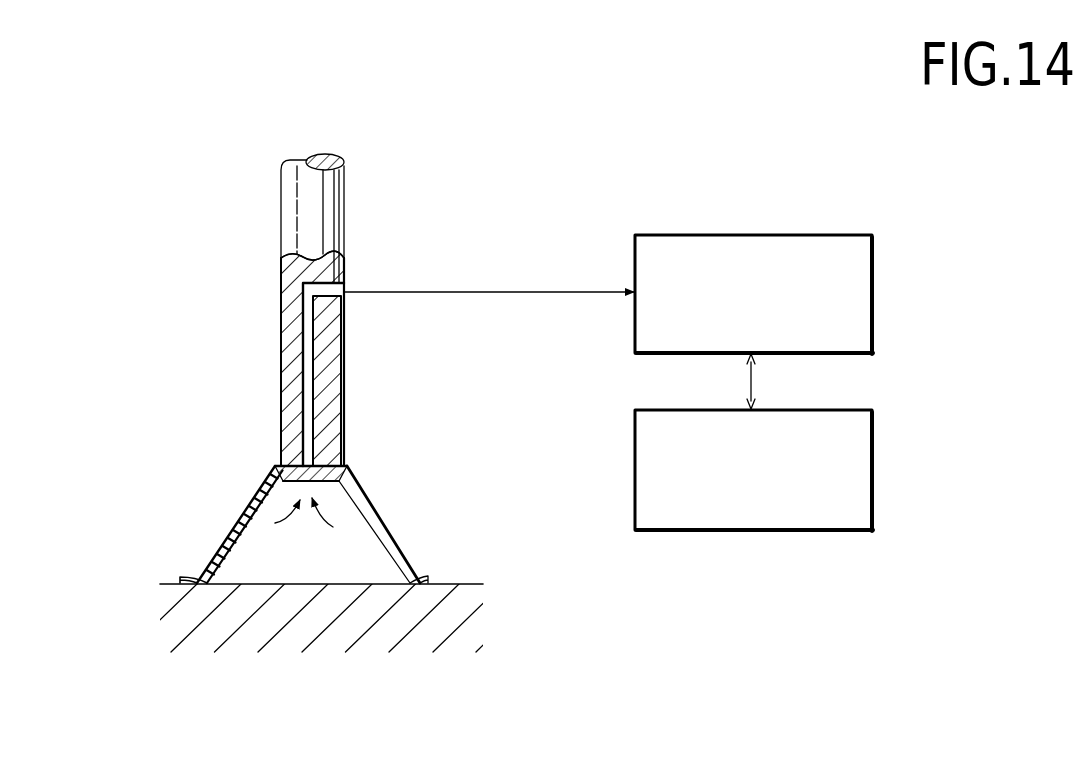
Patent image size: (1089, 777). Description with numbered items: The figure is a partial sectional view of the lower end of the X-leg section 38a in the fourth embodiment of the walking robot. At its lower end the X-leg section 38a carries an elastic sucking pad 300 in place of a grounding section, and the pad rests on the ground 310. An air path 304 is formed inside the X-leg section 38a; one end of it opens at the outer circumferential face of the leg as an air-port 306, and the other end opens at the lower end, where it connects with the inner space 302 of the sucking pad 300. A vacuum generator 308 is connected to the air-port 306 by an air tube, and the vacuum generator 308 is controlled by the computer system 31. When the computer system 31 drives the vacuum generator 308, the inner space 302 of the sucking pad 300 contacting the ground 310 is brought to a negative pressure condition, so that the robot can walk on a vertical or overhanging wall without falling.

The X-leg section 38a is at (297, 211).
The air path 304 is at (308, 386).
The air-port 306 is at (345, 281).
The elastic sucking pad 300 is at (232, 528).
The inner space 302 is at (297, 565).
The ground 310 is at (472, 584).
The vacuum generator 308 is at (765, 235).
The computer system 31 is at (795, 530).